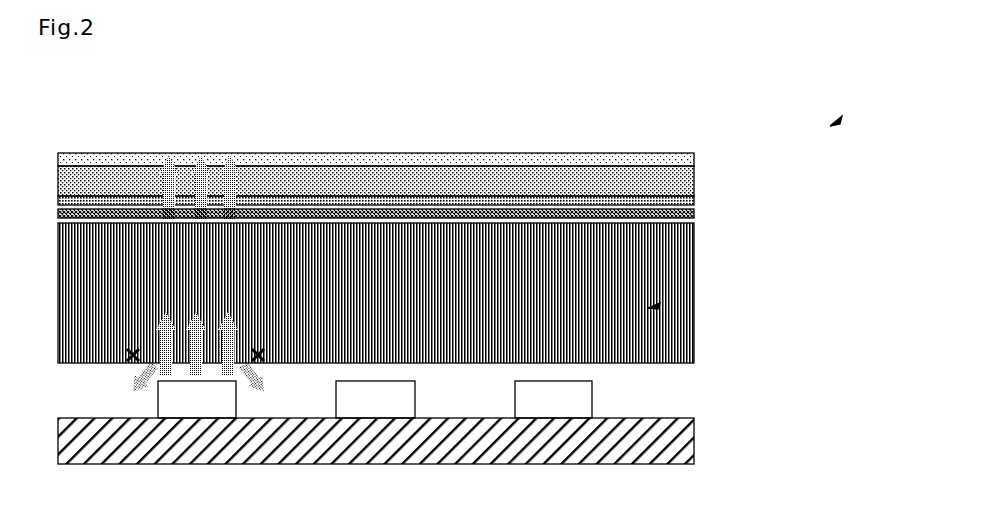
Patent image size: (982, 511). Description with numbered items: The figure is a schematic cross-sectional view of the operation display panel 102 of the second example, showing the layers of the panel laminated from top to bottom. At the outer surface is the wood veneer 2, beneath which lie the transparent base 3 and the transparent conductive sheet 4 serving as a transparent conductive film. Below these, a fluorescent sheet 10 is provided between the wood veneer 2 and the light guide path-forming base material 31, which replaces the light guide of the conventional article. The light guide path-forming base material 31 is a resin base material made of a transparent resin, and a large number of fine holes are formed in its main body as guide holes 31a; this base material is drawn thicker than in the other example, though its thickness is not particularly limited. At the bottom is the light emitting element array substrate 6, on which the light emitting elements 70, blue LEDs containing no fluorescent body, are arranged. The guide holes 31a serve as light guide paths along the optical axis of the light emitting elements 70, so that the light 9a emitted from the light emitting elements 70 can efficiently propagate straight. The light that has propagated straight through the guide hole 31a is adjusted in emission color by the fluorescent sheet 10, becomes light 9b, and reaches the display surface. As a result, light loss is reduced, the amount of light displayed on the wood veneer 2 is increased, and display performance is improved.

The wood veneer 2 is at (686, 152).
The transparent base 3 is at (686, 175).
The transparent conductive sheet 4 is at (686, 196).
The fluorescent sheet 10 is at (686, 206).
The light guide path-forming base material 31 is at (686, 320).
The guide hole 31a is at (640, 300).
The light emitting element 70 is at (584, 400).
The light emitting element array substrate 6 is at (686, 437).
The light 9a is at (187, 345).
The light 9b is at (196, 152).
The operation display panel 102 is at (890, 88).